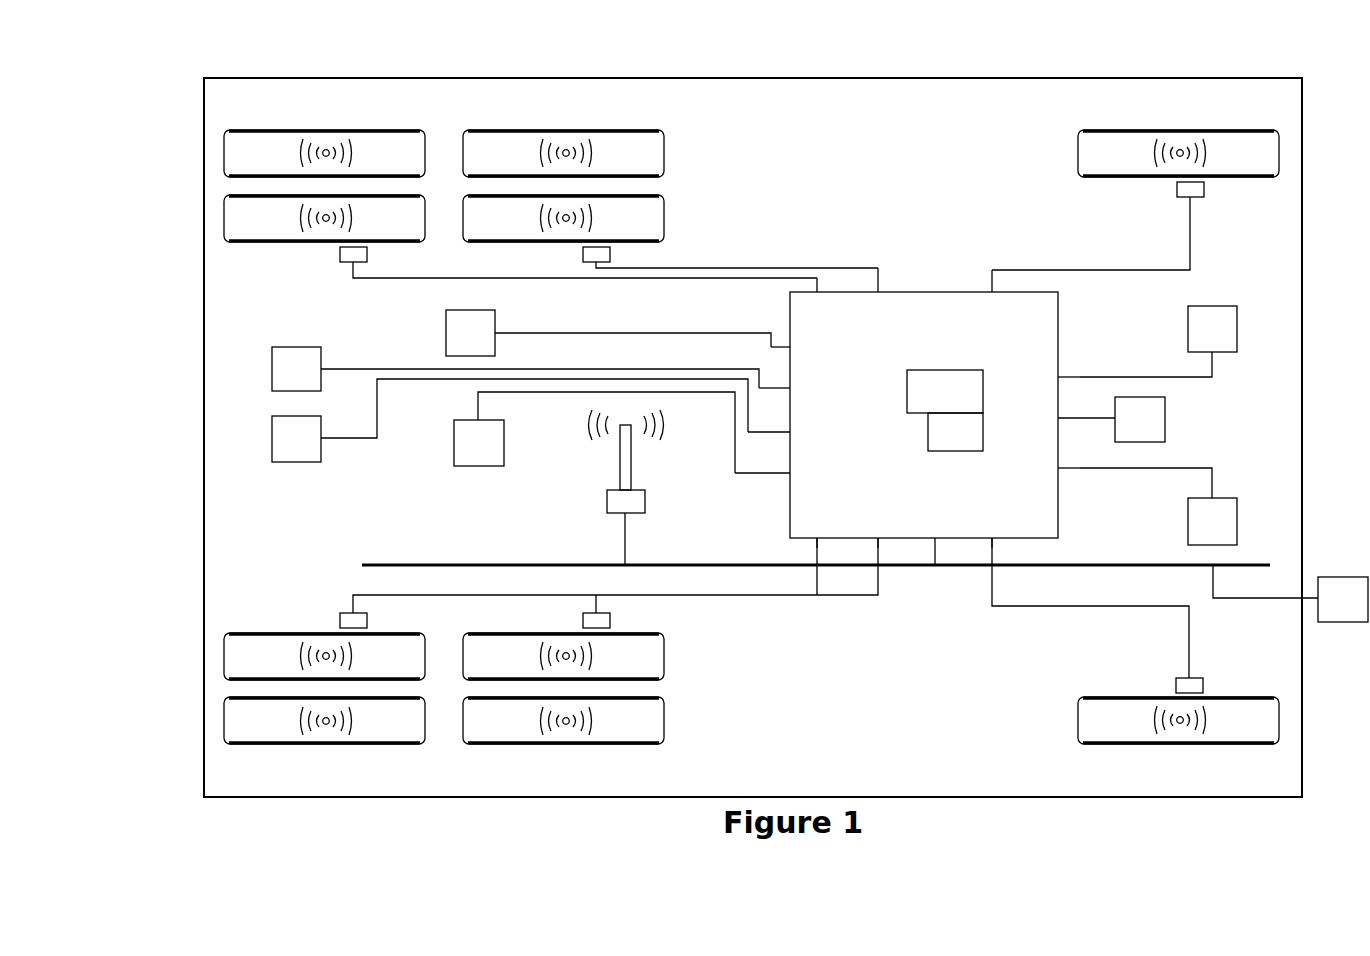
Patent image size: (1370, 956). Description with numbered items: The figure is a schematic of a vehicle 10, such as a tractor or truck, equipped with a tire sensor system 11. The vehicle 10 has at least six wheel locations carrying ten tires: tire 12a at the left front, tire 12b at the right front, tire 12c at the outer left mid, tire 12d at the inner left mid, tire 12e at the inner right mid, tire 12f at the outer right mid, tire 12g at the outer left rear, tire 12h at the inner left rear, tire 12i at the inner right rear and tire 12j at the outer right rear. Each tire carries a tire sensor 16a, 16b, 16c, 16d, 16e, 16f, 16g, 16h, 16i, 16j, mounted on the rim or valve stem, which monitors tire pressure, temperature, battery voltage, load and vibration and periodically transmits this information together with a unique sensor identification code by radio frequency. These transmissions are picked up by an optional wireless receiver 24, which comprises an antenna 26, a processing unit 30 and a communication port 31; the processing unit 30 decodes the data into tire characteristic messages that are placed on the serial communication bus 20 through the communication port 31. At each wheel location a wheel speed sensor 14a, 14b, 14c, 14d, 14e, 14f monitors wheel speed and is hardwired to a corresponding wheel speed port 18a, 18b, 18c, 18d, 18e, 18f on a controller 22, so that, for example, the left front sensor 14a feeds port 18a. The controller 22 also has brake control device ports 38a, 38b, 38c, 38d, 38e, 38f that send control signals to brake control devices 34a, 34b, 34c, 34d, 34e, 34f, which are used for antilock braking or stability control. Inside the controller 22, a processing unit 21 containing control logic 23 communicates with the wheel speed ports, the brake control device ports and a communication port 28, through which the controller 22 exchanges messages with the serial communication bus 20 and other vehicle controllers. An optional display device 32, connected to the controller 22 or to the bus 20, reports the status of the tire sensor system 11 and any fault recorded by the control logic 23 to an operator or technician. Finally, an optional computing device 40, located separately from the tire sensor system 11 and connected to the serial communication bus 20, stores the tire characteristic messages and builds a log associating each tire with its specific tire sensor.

The vehicle 10 is at (414, 68).
The tire sensor system 11 is at (913, 230).
The tire 12a is at (1228, 130).
The tire 12b is at (1237, 697).
The tire 12c is at (650, 130).
The tire 12d is at (650, 195).
The tire 12e is at (665, 660).
The tire 12f is at (665, 738).
The tire 12g is at (276, 128).
The tire 12h is at (266, 245).
The tire 12i is at (250, 632).
The tire 12j is at (405, 746).
The wheel speed sensor 14a is at (1204, 189).
The wheel speed sensor 14b is at (1176, 688).
The wheel speed sensor 14c is at (610, 252).
The wheel speed sensor 14d is at (610, 620).
The wheel speed sensor 14e is at (367, 252).
The wheel speed sensor 14f is at (367, 620).
The tire sensor 16a is at (1180, 150).
The tire sensor 16b is at (1180, 724).
The tire sensor 16c is at (566, 150).
The tire sensor 16d is at (566, 221).
The tire sensor 16e is at (566, 652).
The tire sensor 16f is at (566, 725).
The tire sensor 16g is at (326, 150).
The tire sensor 16h is at (325, 221).
The tire sensor 16i is at (326, 652).
The tire sensor 16j is at (326, 725).
The wheel speed port 18a is at (1016, 321).
The wheel speed port 18b is at (1015, 529).
The wheel speed port 18c is at (900, 321).
The wheel speed port 18d is at (902, 529).
The wheel speed port 18e is at (838, 321).
The wheel speed port 18f is at (834, 529).
The serial communication bus 20 is at (1112, 563).
The processing unit 21 is at (965, 402).
The controller 22 is at (930, 292).
The control logic 23 is at (978, 440).
The wireless receiver 24 is at (598, 472).
The antenna 26 is at (632, 458).
The communication port 28 is at (948, 529).
The processing unit 30 is at (645, 501).
The communication port 31 is at (627, 530).
The display device 32 is at (1154, 430).
The brake control device 34a is at (1233, 340).
The brake control device 34b is at (1234, 532).
The brake control device 34c is at (490, 344).
The brake control device 34d is at (500, 454).
The brake control device 34e is at (317, 380).
The brake control device 34f is at (315, 450).
The brake control device port 38a is at (1054, 384).
The brake control device port 38b is at (1055, 480).
The brake control device port 38c is at (837, 360).
The brake control device port 38d is at (839, 484).
The brake control device port 38e is at (838, 404).
The brake control device port 38f is at (834, 444).
The computing device 40 is at (1357, 610).